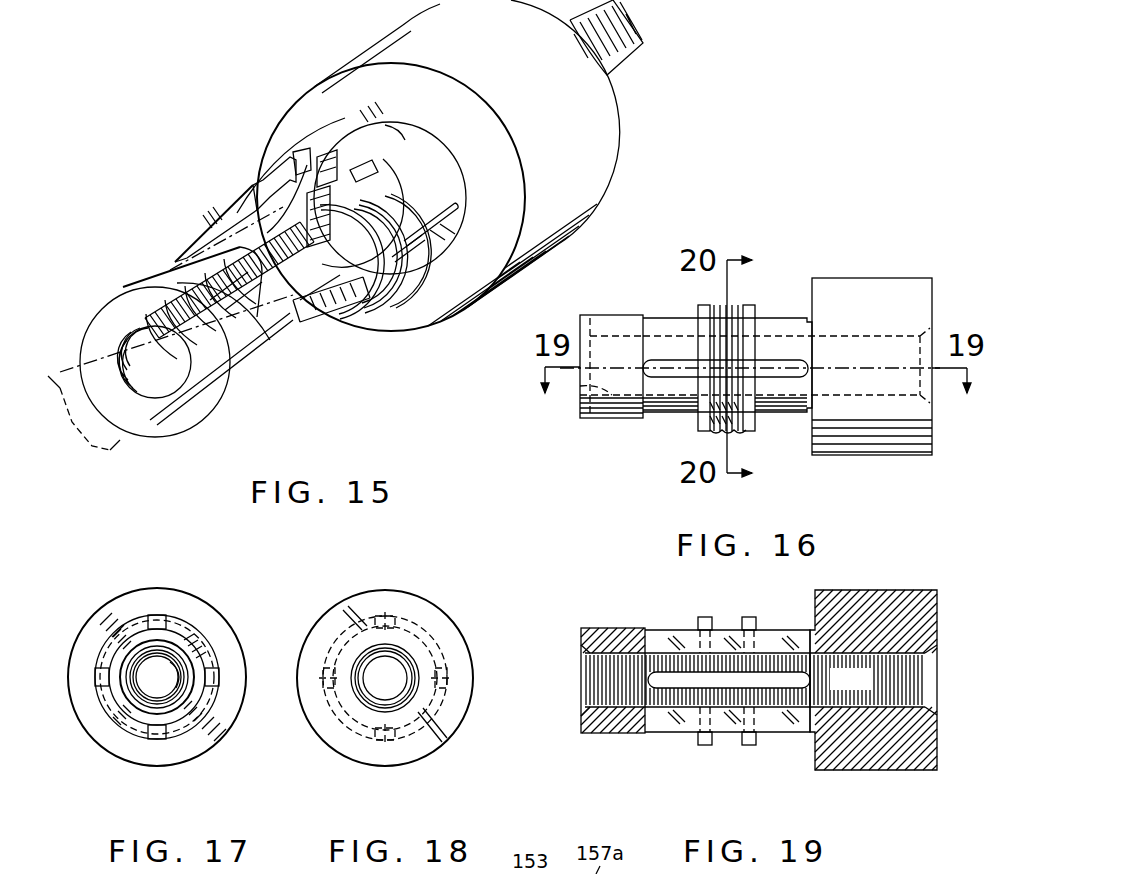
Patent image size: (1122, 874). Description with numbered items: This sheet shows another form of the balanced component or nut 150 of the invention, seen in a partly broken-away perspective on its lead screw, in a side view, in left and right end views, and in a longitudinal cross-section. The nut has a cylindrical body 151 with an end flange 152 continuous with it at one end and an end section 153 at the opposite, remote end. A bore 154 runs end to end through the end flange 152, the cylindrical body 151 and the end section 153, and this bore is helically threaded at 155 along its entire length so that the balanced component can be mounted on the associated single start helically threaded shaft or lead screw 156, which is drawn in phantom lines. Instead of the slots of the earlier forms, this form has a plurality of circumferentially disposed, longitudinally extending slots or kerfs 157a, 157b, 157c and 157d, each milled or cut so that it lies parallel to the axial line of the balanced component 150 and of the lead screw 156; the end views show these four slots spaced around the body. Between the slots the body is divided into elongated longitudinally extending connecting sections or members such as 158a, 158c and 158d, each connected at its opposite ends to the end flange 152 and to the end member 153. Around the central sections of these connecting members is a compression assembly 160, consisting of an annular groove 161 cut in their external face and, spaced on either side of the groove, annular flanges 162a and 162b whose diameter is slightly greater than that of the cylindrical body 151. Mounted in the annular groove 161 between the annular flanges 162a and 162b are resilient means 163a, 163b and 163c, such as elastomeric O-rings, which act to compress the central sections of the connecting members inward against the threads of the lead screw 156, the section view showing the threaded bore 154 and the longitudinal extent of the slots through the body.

In FIG. 15, the balanced component or nut 150 is at (325, 70).
In FIG. 17, the balanced component or nut 150 is at (178, 588).
In FIG. 18, the balanced component or nut 150 is at (452, 612).
In FIG. 15, the cylindrical body 151 is at (148, 266).
In FIG. 16, the cylindrical body 151 is at (775, 330).
In FIG. 17, the cylindrical body 151 is at (204, 645).
In FIG. 19, the cylindrical body 151 is at (755, 681).
In FIG. 15, the end flange 152 is at (593, 160).
In FIG. 16, the end flange 152 is at (875, 290).
In FIG. 17, the end flange 152 is at (243, 660).
In FIG. 19, the end flange 152 is at (879, 592).
In FIG. 15, the end section 153 is at (247, 398).
In FIG. 16, the end section 153 is at (592, 316).
In FIG. 17, the end section 153 is at (198, 728).
In FIG. 19, the end section 153 is at (597, 628).
In FIG. 15, the bore 154 is at (178, 363).
In FIG. 16, the bore 154 is at (577, 387).
In FIG. 17, the bore 154 is at (176, 688).
In FIG. 18, the bore 154 is at (403, 689).
In FIG. 19, the bore 154 is at (870, 690).
In FIG. 15, the helical thread 155 is at (146, 388).
In FIG. 16, the helical thread 155 is at (725, 368).
In FIG. 17, the helical thread 155 is at (178, 690).
In FIG. 19, the helical thread 155 is at (905, 688).
In FIG. 15, the helically threaded shaft or lead screw 156 is at (622, 62).
In FIG. 15, the slot or kerf 157a is at (305, 148).
In FIG. 16, the slot or kerf 157a is at (677, 372).
In FIG. 17, the slot or kerf 157a is at (157, 616).
In FIG. 18, the slot or kerf 157a is at (388, 612).
In FIG. 16, the slot or kerf 157b is at (660, 318).
In FIG. 17, the slot or kerf 157b is at (95, 677).
In FIG. 18, the slot or kerf 157b is at (450, 680).
In FIG. 19, the slot or kerf 157b is at (660, 640).
In FIG. 15, the slot or kerf 157c is at (308, 365).
In FIG. 17, the slot or kerf 157c is at (157, 739).
In FIG. 18, the slot or kerf 157c is at (388, 742).
In FIG. 19, the slot or kerf 157c is at (768, 690).
In FIG. 15, the slot or kerf 157d is at (445, 215).
In FIG. 16, the slot or kerf 157d is at (645, 414).
In FIG. 17, the slot or kerf 157d is at (219, 677).
In FIG. 18, the slot or kerf 157d is at (320, 672).
In FIG. 19, the slot or kerf 157d is at (668, 722).
In FIG. 15, the connecting section or member 158a is at (312, 120).
In FIG. 15, the connecting section or member 158c is at (420, 255).
In FIG. 15, the connecting section or member 158d is at (446, 181).
In FIG. 15, the compression assembly 160 is at (230, 190).
In FIG. 16, the compression assembly 160 is at (738, 292).
In FIG. 15, the annular groove 161 is at (268, 170).
In FIG. 15, the annular flange 162a is at (330, 325).
In FIG. 16, the annular flange 162a is at (703, 306).
In FIG. 17, the annular flange 162a is at (186, 622).
In FIG. 19, the annular flange 162a is at (706, 618).
In FIG. 15, the annular flange 162b is at (400, 290).
In FIG. 16, the annular flange 162b is at (750, 304).
In FIG. 19, the annular flange 162b is at (750, 618).
In FIG. 15, the resilient means 163a is at (355, 252).
In FIG. 16, the resilient means 163a is at (715, 430).
In FIG. 15, the resilient means 163b is at (395, 165).
In FIG. 16, the resilient means 163b is at (745, 432).
In FIG. 15, the resilient means 163c is at (382, 196).
In FIG. 16, the resilient means 163c is at (745, 425).